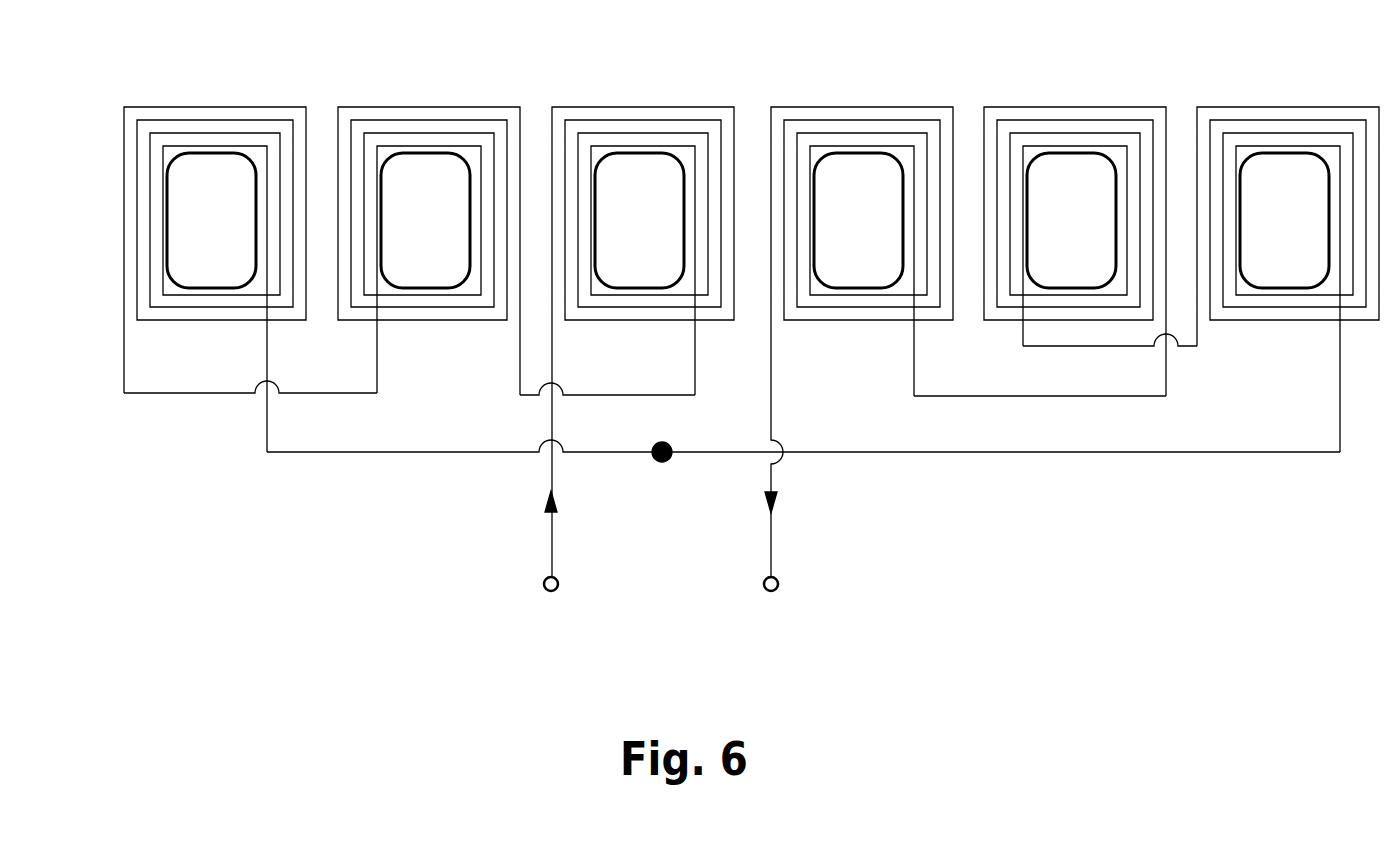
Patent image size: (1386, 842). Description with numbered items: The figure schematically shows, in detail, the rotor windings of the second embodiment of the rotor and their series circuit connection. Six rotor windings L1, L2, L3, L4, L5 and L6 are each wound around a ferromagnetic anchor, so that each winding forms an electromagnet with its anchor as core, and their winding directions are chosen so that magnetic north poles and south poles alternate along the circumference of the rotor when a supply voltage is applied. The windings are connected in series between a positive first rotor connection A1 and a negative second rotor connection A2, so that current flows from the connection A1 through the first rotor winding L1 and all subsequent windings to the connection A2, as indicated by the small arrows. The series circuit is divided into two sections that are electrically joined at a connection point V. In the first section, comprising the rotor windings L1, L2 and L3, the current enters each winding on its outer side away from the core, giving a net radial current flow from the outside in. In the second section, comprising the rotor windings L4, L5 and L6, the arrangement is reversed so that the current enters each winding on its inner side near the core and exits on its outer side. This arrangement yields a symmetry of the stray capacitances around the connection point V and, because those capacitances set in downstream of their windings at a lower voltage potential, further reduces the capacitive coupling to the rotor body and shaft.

The first rotor winding L1 is at (646, 107).
The second rotor winding L2 is at (432, 107).
The third rotor winding L3 is at (218, 107).
The fourth rotor winding L4 is at (1291, 107).
The fifth rotor winding L5 is at (1078, 107).
The sixth rotor winding L6 is at (865, 107).
The first rotor connection A1 is at (531, 570).
The second rotor connection A2 is at (784, 571).
The connection point V is at (658, 462).